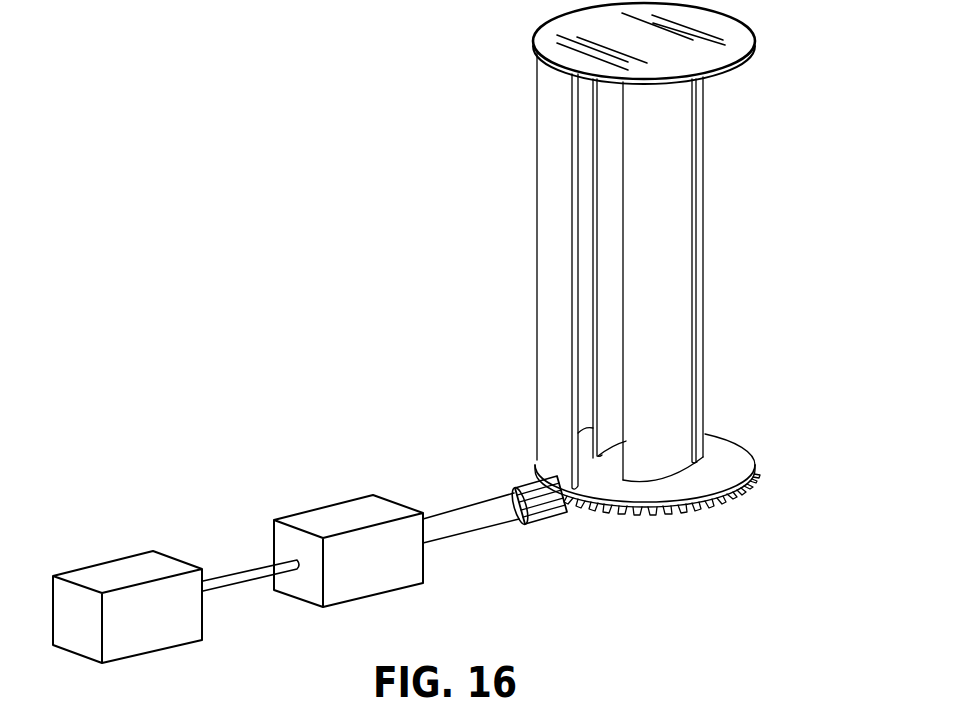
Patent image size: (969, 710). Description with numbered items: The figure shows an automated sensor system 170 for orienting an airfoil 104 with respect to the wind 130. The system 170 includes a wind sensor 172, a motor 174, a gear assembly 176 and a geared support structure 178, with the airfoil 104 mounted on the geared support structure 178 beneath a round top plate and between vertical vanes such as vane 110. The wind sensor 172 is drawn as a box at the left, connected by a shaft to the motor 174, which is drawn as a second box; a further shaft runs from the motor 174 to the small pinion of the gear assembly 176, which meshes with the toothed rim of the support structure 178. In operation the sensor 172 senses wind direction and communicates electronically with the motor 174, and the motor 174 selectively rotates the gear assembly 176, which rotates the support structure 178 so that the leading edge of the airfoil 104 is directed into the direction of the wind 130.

The airfoil 104 is at (688, 196).
The vane 110 is at (548, 290).
The wind 130 is at (549, 246).
The sensor system 170 is at (312, 372).
The wind sensor 172 is at (178, 631).
The motor 174 is at (399, 572).
The gear assembly 176 is at (557, 520).
The geared support structure 178 is at (755, 473).